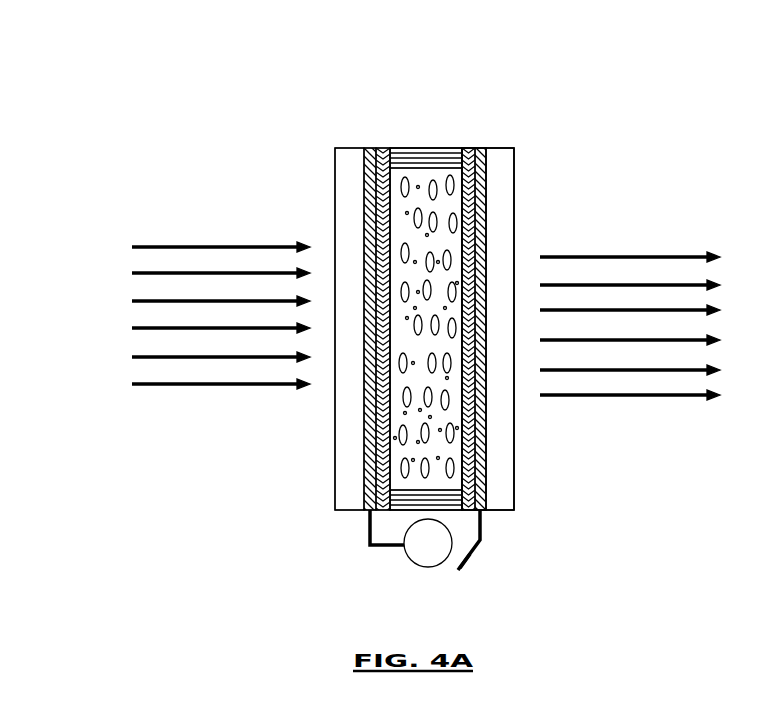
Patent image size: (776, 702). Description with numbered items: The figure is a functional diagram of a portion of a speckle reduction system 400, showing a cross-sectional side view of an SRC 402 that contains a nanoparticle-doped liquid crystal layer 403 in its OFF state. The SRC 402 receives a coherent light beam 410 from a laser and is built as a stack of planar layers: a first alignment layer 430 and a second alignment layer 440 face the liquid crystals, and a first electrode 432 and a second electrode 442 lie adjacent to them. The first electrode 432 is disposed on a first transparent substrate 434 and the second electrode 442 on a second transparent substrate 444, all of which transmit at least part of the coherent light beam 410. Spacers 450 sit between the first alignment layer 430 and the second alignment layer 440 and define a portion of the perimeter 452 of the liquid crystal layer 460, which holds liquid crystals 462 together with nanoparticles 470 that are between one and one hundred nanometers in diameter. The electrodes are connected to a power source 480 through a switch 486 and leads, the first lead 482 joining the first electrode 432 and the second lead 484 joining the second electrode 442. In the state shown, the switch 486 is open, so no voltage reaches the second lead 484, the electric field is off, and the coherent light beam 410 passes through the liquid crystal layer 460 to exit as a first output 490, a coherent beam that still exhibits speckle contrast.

The speckle reduction system 400 is at (358, 74).
The SRC 402 is at (562, 295).
The nanoparticle-doped liquid crystal layer 403 is at (465, 143).
The coherent light beam 410 is at (127, 239).
The first alignment layer 430 is at (372, 160).
The first electrode 432 is at (364, 200).
The first transparent substrate 434 is at (335, 228).
The second alignment layer 440 is at (480, 153).
The second electrode 442 is at (486, 188).
The second transparent substrate 444 is at (514, 217).
The spacers 450 is at (470, 148).
The perimeter 452 is at (384, 144).
The liquid crystal layer 460 is at (435, 277).
The liquid crystals 462 is at (403, 447).
The nanoparticles 470 is at (443, 452).
The power source 480 is at (443, 570).
The first lead 482 is at (372, 532).
The second lead 484 is at (481, 540).
The switch 486 is at (470, 560).
The first output 490 is at (718, 247).